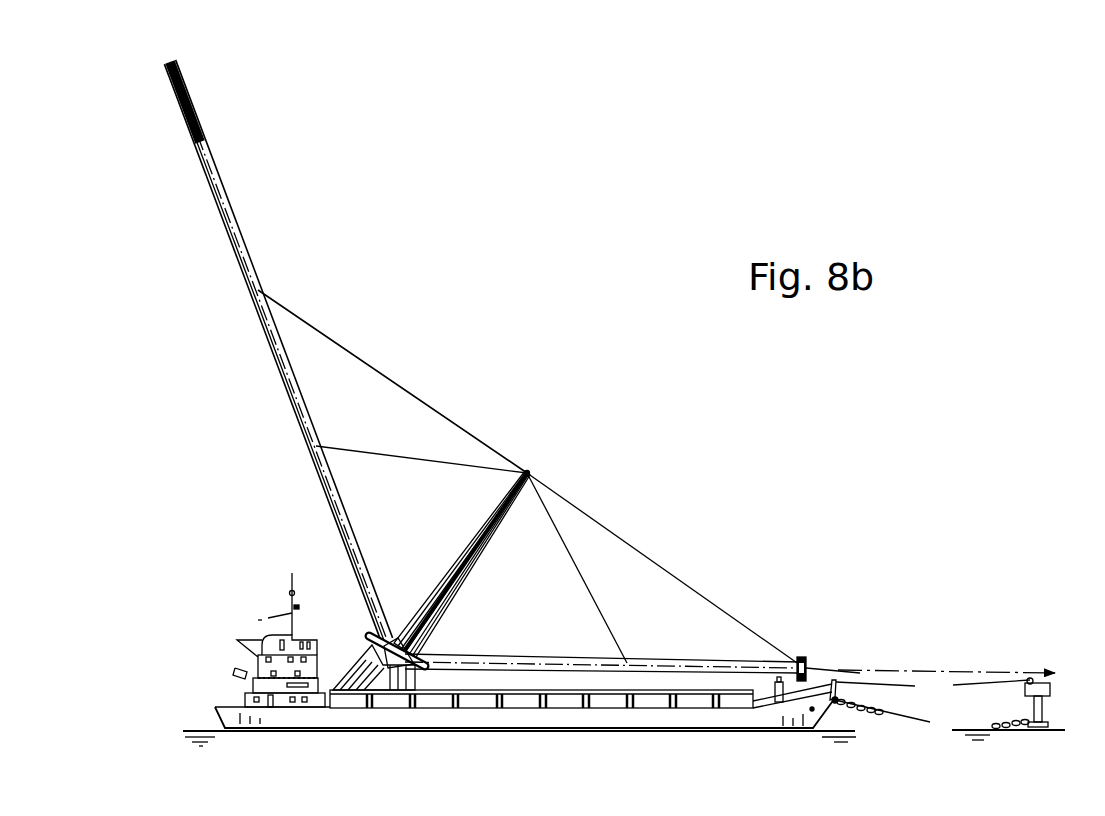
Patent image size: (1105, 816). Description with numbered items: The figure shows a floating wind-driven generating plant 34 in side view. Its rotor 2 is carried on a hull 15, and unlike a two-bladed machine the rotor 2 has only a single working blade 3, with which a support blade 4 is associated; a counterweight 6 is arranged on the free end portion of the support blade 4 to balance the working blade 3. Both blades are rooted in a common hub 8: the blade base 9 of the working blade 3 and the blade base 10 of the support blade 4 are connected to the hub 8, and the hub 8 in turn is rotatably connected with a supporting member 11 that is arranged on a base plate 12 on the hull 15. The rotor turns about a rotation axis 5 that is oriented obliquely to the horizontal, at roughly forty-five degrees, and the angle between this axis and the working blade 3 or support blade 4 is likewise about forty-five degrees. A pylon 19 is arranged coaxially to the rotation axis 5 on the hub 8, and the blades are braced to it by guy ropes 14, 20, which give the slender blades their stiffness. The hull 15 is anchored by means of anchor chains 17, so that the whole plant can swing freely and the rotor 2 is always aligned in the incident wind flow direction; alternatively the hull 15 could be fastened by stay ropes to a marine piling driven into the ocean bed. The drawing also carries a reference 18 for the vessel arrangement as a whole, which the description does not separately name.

The rotor 2 is at (379, 233).
The working blade 3 is at (225, 200).
The support blade 4 is at (650, 663).
The rotation axis 5 is at (535, 470).
The counterweight 6 is at (804, 657).
The hub 8 is at (369, 636).
The blade base 9 is at (391, 596).
The blade base 10 is at (453, 640).
The supporting member 11 is at (348, 672).
The base plate 12 is at (425, 690).
The guy ropes 14 is at (379, 453).
The hull 15 is at (812, 708).
The anchor chains 17 is at (866, 708).
The vessel 18 is at (195, 686).
The pylon 19 is at (495, 522).
The guy rope 20 is at (447, 400).
The wind-driven generating plant 34 is at (506, 269).